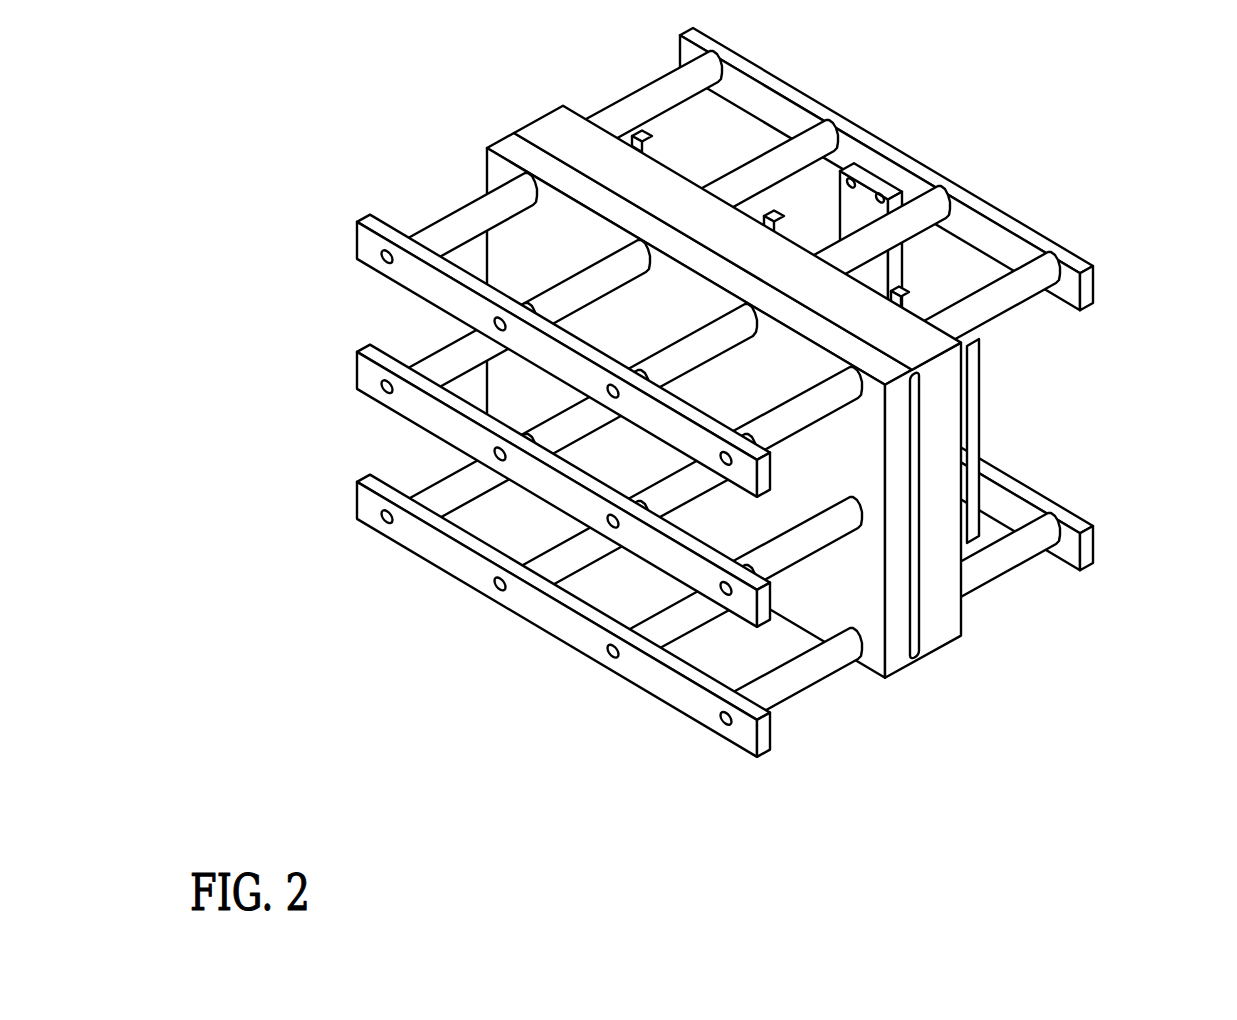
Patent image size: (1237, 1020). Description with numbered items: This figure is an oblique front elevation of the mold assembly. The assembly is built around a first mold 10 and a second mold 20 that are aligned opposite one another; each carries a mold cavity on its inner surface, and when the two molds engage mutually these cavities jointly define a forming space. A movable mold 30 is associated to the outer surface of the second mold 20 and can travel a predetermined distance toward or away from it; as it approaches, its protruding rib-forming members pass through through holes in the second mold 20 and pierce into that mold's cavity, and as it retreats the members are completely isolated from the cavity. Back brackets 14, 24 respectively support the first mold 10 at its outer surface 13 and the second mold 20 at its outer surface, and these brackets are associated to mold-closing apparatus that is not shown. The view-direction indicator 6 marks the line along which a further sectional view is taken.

The section view direction indicator 6 is at (763, 276).
The first mold 10 is at (500, 137).
The outer surface 13 is at (530, 211).
The back bracket 14 is at (318, 224).
The second mold 20 is at (549, 102).
The back bracket 24 is at (1162, 260).
The movable mold 30 is at (1000, 411).